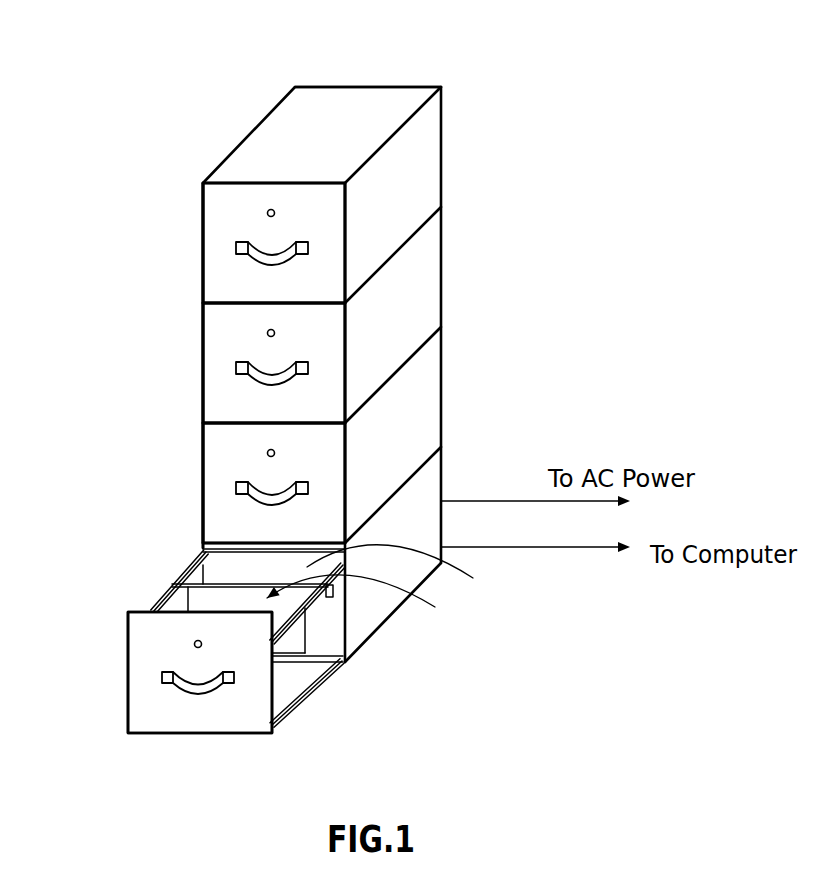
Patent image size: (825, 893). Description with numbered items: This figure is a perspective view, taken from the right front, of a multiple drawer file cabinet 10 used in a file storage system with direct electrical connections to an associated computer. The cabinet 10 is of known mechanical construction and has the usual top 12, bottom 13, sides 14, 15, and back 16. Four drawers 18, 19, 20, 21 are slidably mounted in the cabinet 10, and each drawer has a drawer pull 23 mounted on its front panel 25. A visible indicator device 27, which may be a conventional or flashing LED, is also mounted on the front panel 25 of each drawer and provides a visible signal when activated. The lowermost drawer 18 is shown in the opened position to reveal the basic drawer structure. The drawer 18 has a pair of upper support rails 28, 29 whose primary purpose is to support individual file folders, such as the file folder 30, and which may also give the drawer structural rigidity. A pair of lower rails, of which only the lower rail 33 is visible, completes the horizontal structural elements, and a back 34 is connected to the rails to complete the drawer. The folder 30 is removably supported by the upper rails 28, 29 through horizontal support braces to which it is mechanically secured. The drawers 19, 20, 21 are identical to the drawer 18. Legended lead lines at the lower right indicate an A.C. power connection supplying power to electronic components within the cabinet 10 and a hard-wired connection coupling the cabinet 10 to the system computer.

The multiple drawer file cabinet 10 is at (320, 350).
The top 12 is at (297, 160).
The bottom 13 is at (395, 609).
The side 14 is at (200, 287).
The side 15 is at (413, 167).
The back 16 is at (392, 82).
The lowermost drawer 18 is at (148, 623).
The drawer 19 is at (248, 512).
The drawer 20 is at (215, 342).
The drawer 21 is at (217, 225).
The drawer pull 23 is at (250, 258).
The front panel 25 is at (230, 205).
The visible indicator device 27 is at (268, 210).
The upper support rail 28 is at (190, 570).
The upper support rail 29 is at (283, 632).
The file folder 30 is at (366, 602).
The lower rail 33 is at (323, 677).
The back 34 is at (410, 575).